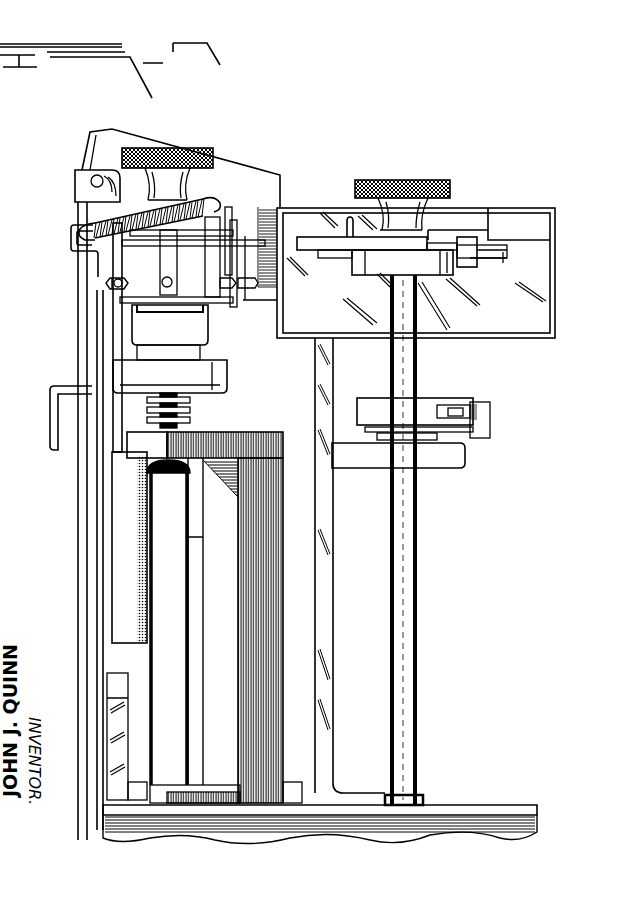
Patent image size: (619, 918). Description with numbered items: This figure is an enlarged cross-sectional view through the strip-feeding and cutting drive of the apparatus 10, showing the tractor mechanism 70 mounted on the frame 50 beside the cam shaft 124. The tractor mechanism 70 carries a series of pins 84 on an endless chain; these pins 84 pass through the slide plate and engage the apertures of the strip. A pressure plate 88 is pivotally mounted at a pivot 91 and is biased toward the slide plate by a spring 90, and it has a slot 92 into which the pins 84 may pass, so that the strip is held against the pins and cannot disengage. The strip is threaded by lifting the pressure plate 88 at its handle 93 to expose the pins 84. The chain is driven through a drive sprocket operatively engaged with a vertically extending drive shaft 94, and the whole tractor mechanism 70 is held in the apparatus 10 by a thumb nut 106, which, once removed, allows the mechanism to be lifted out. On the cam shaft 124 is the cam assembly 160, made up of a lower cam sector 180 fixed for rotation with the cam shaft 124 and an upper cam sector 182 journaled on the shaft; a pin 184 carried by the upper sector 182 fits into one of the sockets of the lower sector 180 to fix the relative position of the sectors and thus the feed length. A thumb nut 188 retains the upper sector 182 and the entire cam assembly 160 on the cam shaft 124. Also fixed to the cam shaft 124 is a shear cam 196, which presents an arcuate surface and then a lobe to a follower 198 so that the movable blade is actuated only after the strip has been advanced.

The apparatus 10 is at (72, 530).
The frame 50 is at (488, 805).
The tractor mechanism 70 is at (125, 308).
The pins 84 is at (173, 283).
The pressure plate 88 is at (72, 250).
The spring 90 is at (210, 196).
The pivot 91 is at (91, 182).
The slot 92 is at (108, 283).
The handle 93 is at (50, 420).
The drive shaft 94 is at (182, 403).
The thumb nut 106 is at (205, 150).
The cam shaft 124 is at (417, 368).
The cam assembly 160 is at (503, 265).
The lower cam sector 180 is at (330, 258).
The upper cam sector 182 is at (315, 237).
The pin 184 is at (350, 217).
The thumb nut 188 is at (437, 180).
The shear cam 196 is at (362, 398).
The follower 198 is at (437, 412).